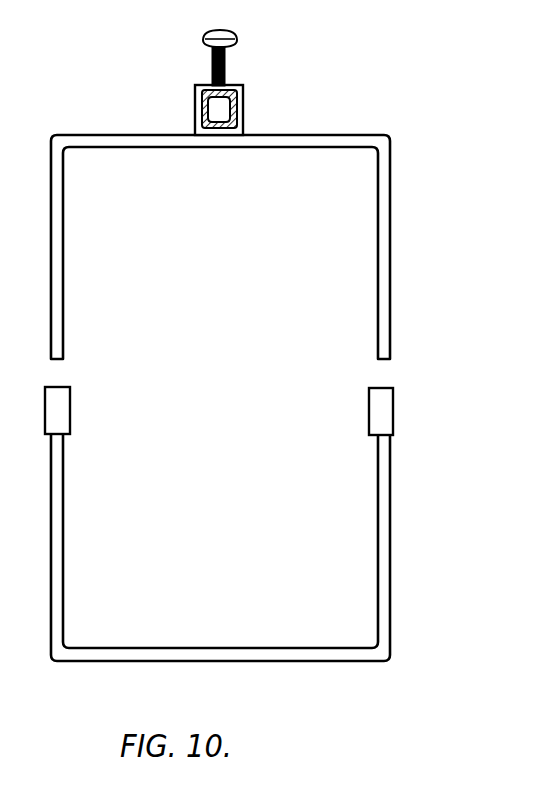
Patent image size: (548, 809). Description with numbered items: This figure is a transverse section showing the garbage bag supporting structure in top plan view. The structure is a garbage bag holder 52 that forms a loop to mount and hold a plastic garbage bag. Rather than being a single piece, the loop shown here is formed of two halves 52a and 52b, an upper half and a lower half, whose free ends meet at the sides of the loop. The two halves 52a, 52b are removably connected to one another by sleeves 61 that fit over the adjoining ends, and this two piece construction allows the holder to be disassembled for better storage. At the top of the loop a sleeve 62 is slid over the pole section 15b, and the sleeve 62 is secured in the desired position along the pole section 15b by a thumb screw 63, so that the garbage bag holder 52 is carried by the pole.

The garbage bag holder 52 is at (261, 398).
The half of garbage bag holder 52a is at (391, 258).
The half of garbage bag holder 52b is at (391, 538).
The sleeves 61 is at (379, 388).
The sleeve 62 is at (244, 99).
The pole section 15b is at (229, 89).
The thumb screw 63 is at (234, 37).